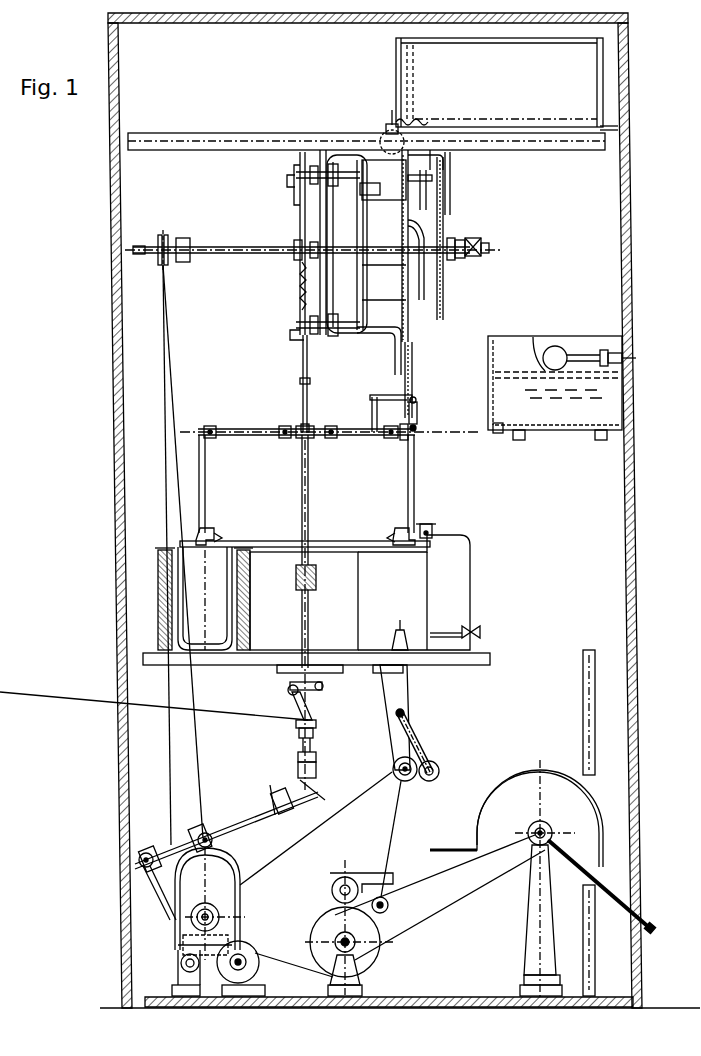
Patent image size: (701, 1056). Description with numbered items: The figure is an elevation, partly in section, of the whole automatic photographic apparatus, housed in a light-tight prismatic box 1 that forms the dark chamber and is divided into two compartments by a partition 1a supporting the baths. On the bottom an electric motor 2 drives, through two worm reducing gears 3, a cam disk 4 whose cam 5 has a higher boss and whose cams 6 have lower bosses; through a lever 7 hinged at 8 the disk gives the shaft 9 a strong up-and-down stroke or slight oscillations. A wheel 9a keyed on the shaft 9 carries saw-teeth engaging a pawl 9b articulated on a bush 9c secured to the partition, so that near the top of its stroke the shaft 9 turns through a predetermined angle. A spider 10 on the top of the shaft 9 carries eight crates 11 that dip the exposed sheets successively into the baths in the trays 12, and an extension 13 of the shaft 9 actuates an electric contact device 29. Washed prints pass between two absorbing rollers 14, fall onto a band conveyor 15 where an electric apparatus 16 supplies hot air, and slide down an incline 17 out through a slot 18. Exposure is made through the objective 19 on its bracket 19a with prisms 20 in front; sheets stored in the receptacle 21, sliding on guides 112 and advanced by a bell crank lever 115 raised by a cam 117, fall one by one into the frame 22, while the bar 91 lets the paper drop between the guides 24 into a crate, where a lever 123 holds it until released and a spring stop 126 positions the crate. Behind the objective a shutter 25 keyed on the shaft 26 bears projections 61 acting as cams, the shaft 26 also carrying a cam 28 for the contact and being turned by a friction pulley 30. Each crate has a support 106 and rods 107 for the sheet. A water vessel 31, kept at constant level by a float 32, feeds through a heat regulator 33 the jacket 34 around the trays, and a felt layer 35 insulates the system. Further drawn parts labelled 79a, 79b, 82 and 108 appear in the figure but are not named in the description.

The prismatic box 1 is at (121, 580).
The partition 1a is at (585, 652).
The electric motor 2 is at (254, 952).
The worm reducing gears 3 is at (258, 948).
The cam disk 4 is at (250, 898).
The cam 5 is at (238, 868).
The cams 6 is at (222, 946).
The lever 7 is at (242, 808).
The hinge 8 is at (139, 864).
The shaft 9 is at (309, 496).
The wheel 9a is at (318, 728).
The pawl 9b is at (290, 706).
The bush 9c is at (311, 630).
The spider 10 is at (240, 430).
The gripping frames or crates 11 is at (206, 465).
The trays 12 is at (420, 580).
The extension 13 is at (310, 394).
The rollers 14 is at (436, 780).
The band conveyor 15 is at (432, 880).
The electric apparatus 16 is at (346, 877).
The incline 17 is at (556, 855).
The slot 18 is at (636, 916).
The objective 19 is at (452, 262).
The bracket 19a is at (490, 249).
The prisms 20 is at (480, 257).
The receptacle 21 is at (438, 60).
The frame 22 is at (404, 198).
The guides 24 is at (413, 358).
The shutter 25 is at (444, 306).
The shaft 26 is at (229, 254).
The cam 28 is at (297, 246).
The electric contact device 29 is at (303, 202).
The pulley 30 is at (160, 264).
The water vessel 31 is at (555, 388).
The float 32 is at (557, 357).
The heat regulator 33 is at (433, 532).
The jacket 34 is at (240, 541).
The felt layer 35 is at (158, 613).
The projections 61 is at (445, 208).
The contact 79a is at (437, 190).
The contact 79b is at (437, 176).
The hub 82 is at (425, 166).
The bar 91 is at (362, 330).
The support 106 is at (204, 536).
The rods 107 is at (396, 538).
The valve 108 is at (397, 642).
The guides 112 is at (192, 142).
The bell crank lever 115 is at (440, 172).
The cam 117 is at (450, 177).
The lever 123 is at (419, 416).
The spring stop 126 is at (371, 411).